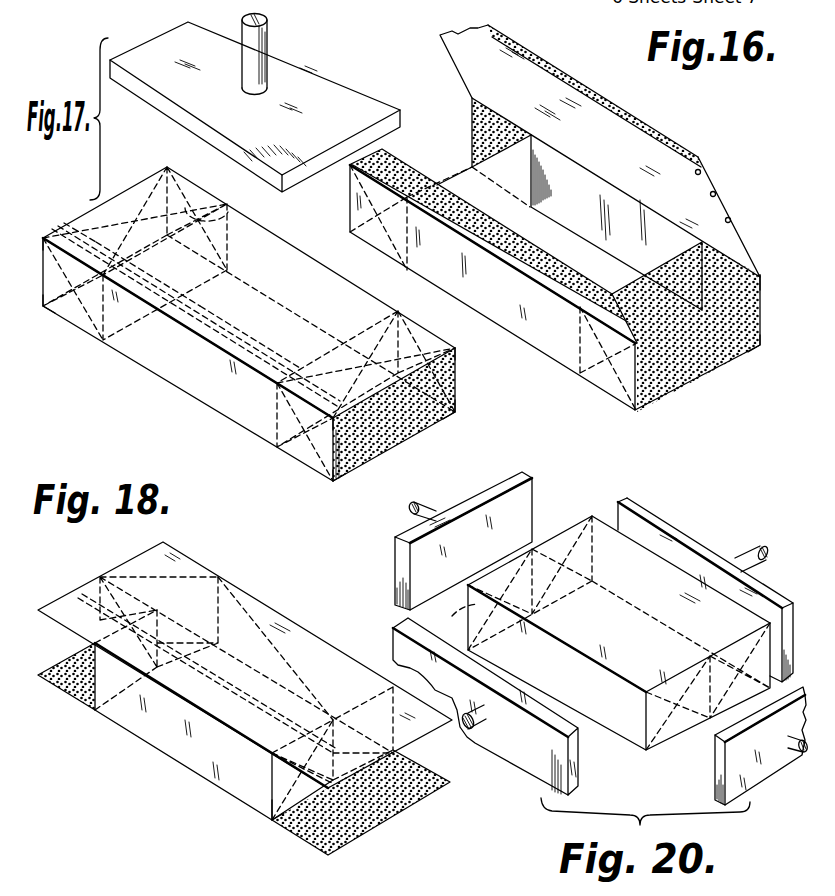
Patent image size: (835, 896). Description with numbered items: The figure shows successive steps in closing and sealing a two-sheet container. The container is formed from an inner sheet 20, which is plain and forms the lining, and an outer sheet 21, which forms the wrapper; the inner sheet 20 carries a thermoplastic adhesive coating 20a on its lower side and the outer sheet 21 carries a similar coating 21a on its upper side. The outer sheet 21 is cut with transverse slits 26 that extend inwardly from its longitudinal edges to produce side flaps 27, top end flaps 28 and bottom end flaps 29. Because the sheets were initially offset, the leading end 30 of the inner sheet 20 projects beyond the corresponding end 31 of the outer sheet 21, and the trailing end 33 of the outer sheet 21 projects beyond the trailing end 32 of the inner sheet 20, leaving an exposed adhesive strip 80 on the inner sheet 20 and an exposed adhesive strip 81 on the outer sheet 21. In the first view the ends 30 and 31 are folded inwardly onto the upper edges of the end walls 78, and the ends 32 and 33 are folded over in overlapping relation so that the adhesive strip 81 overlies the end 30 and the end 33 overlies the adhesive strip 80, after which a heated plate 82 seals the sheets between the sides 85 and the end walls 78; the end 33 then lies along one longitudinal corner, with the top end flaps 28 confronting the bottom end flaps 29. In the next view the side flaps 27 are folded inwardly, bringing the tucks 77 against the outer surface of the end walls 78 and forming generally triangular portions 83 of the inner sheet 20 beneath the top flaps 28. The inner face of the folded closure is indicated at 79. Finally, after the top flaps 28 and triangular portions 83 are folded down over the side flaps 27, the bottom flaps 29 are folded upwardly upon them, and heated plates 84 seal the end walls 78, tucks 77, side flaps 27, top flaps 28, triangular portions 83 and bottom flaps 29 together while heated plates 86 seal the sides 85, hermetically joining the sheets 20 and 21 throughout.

In FIG. 16, the inner sheet 20 is at (577, 238).
In FIG. 16, the coating of thermoplastic adhesive 20a is at (578, 259).
In FIG. 17, the outer sheet 21 is at (270, 332).
In FIG. 16, the outer sheet 21 is at (697, 142).
In FIG. 16, the coating of thermoplastic adhesive 21a is at (563, 70).
In FIG. 17, the transverse slits 26 is at (313, 408).
In FIG. 16, the transverse slits 26 is at (505, 113).
In FIG. 17, the side flaps 27 is at (160, 180).
In FIG. 16, the side flaps 27 is at (472, 118).
In FIG. 18, the side flaps 27 is at (277, 792).
In FIG. 17, the top end flaps 28 is at (85, 222).
In FIG. 16, the top end flaps 28 is at (731, 220).
In FIG. 18, the top end flaps 28 is at (187, 551).
In FIG. 20, the top end flaps 28 is at (428, 732).
In FIG. 17, the bottom end flaps 29 is at (143, 247).
In FIG. 16, the bottom end flaps 29 is at (685, 380).
In FIG. 18, the bottom end flaps 29 is at (57, 693).
In FIG. 20, the bottom end flaps 29 is at (675, 771).
In FIG. 17, the leading end of inner sheet 30 is at (187, 333).
In FIG. 16, the leading end of inner sheet 30 is at (540, 270).
In FIG. 17, the leading end of outer sheet 31 is at (285, 370).
In FIG. 16, the leading end of outer sheet 31 is at (563, 275).
In FIG. 17, the trailing end of inner sheet 32 is at (163, 323).
In FIG. 16, the trailing end of inner sheet 32 is at (668, 130).
In FIG. 16, the trailing end of outer sheet 33 is at (705, 171).
In FIG. 17, the tucks 77 is at (205, 197).
In FIG. 16, the tucks 77 is at (470, 140).
In FIG. 18, the tucks 77 is at (115, 733).
In FIG. 20, the tucks 77 is at (559, 523).
In FIG. 17, the end walls 78 is at (245, 218).
In FIG. 16, the end walls 78 is at (457, 180).
In FIG. 18, the end walls 78 is at (218, 566).
In FIG. 16, the inner wall face 79 is at (557, 223).
In FIG. 17, the adhesive strip 80 is at (240, 333).
In FIG. 16, the adhesive strip 80 is at (410, 167).
In FIG. 18, the adhesive strip 80 is at (240, 717).
In FIG. 17, the adhesive strip 81 is at (240, 368).
In FIG. 16, the adhesive strip 81 is at (643, 110).
In FIG. 18, the adhesive strip 81 is at (70, 633).
In FIG. 17, the heated plate 82 is at (345, 80).
In FIG. 18, the triangular portions 83 is at (83, 592).
In FIG. 20, the triangular portions 83 is at (695, 746).
In FIG. 20, the heated plates 84 is at (500, 486).
In FIG. 17, the sides 85 is at (185, 383).
In FIG. 16, the sides 85 is at (543, 348).
In FIG. 18, the sides 85 is at (200, 768).
In FIG. 20, the sides 85 is at (633, 536).
In FIG. 20, the heated plates 86 is at (757, 580).